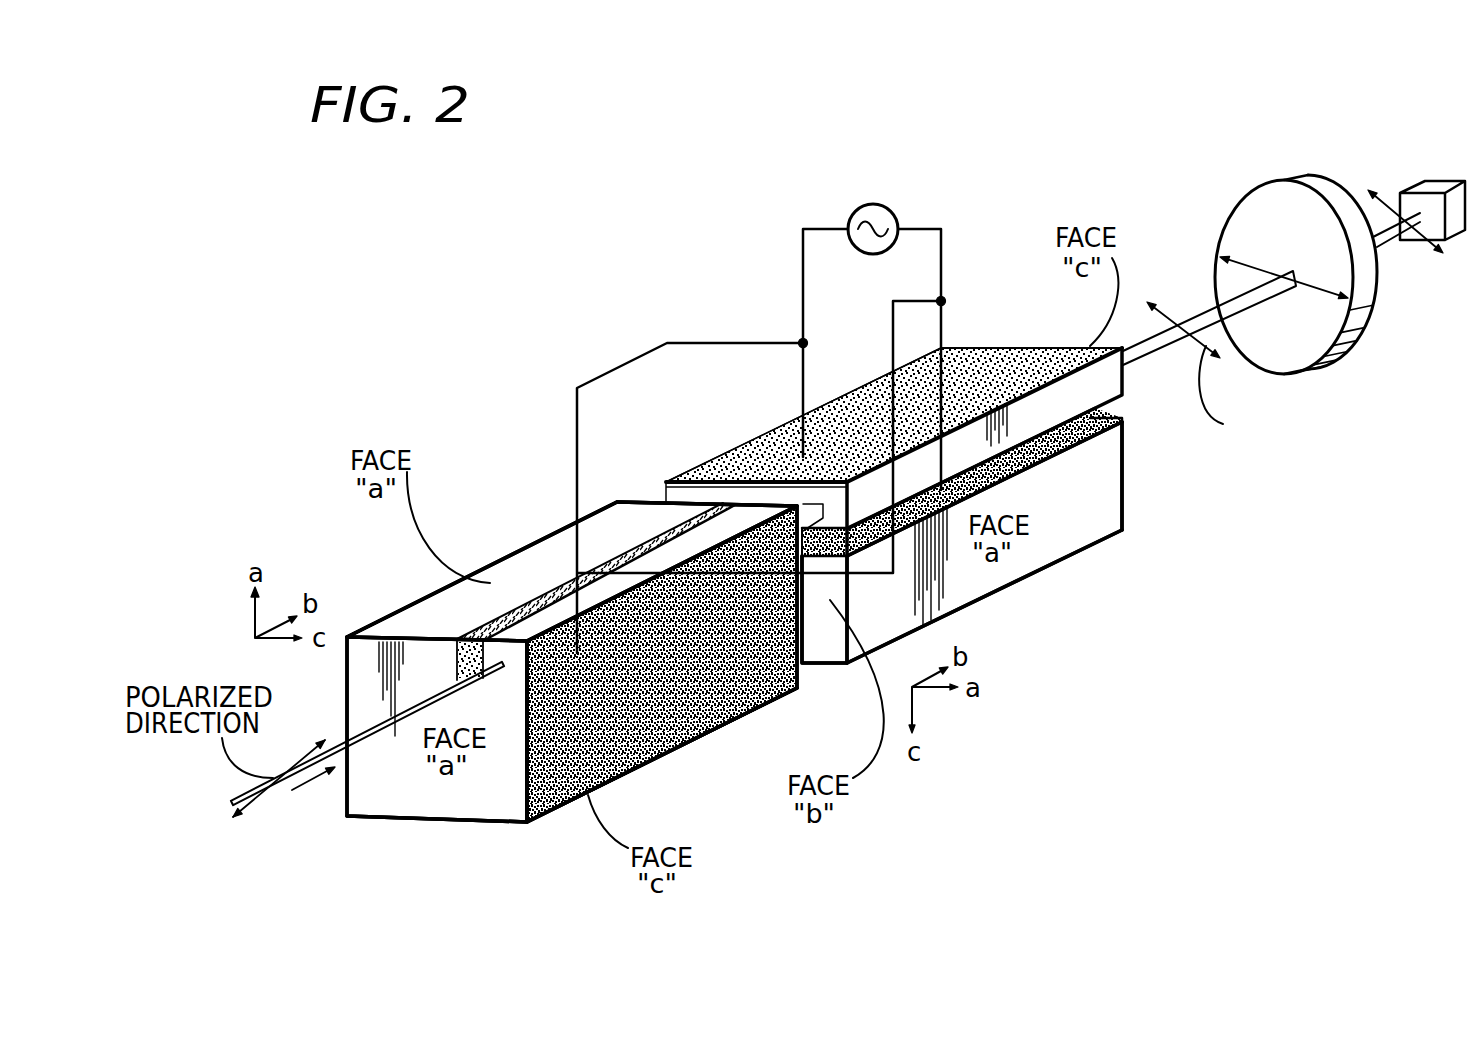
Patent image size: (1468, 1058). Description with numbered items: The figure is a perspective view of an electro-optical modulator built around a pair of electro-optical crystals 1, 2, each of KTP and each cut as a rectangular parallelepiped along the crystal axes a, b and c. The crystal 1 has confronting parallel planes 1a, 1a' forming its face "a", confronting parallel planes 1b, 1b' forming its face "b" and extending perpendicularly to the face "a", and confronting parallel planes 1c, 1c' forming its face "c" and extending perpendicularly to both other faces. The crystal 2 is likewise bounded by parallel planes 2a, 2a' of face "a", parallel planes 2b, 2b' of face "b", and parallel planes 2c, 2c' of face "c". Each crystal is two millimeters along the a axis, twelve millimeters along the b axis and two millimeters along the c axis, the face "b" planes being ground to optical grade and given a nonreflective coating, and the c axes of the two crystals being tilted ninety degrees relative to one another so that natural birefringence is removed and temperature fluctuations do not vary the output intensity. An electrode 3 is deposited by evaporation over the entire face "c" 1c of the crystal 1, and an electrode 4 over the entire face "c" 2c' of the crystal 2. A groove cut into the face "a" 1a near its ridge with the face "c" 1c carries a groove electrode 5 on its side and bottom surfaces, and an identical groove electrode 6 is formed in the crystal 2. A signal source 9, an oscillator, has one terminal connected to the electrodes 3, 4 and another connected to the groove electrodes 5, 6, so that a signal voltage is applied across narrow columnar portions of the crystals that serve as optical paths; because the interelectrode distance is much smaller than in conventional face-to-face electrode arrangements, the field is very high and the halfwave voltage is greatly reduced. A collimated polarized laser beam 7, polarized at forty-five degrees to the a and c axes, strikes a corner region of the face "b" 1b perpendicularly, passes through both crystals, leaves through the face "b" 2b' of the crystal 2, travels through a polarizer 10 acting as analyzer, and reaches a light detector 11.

The electro-optical crystal 1 is at (695, 742).
The face "a" plane 1a is at (572, 545).
The face "a" plane 1a' is at (572, 779).
The face "b" plane 1b is at (437, 758).
The face "b" plane 1b' is at (700, 464).
The face "c" plane 1c is at (662, 671).
The face "c" plane 1c' is at (482, 569).
The electro-optical crystal 2 is at (1048, 568).
The face "a" plane 2a is at (1011, 504).
The face "a" plane 2a' is at (894, 415).
The face "b" plane 2b is at (830, 638).
The face "b" plane 2b' is at (1167, 477).
The face "c" plane 2c is at (984, 600).
The face "c" plane 2c' is at (1031, 301).
The electrode 3 is at (748, 704).
The electrode 4 is at (733, 463).
The groove electrode 5 is at (522, 605).
The groove electrode 6 is at (1107, 433).
The polarized laser beam 7 is at (367, 725).
The signal source 9 is at (880, 205).
The polarizer 10 is at (1277, 180).
The light detector 11 is at (1430, 181).